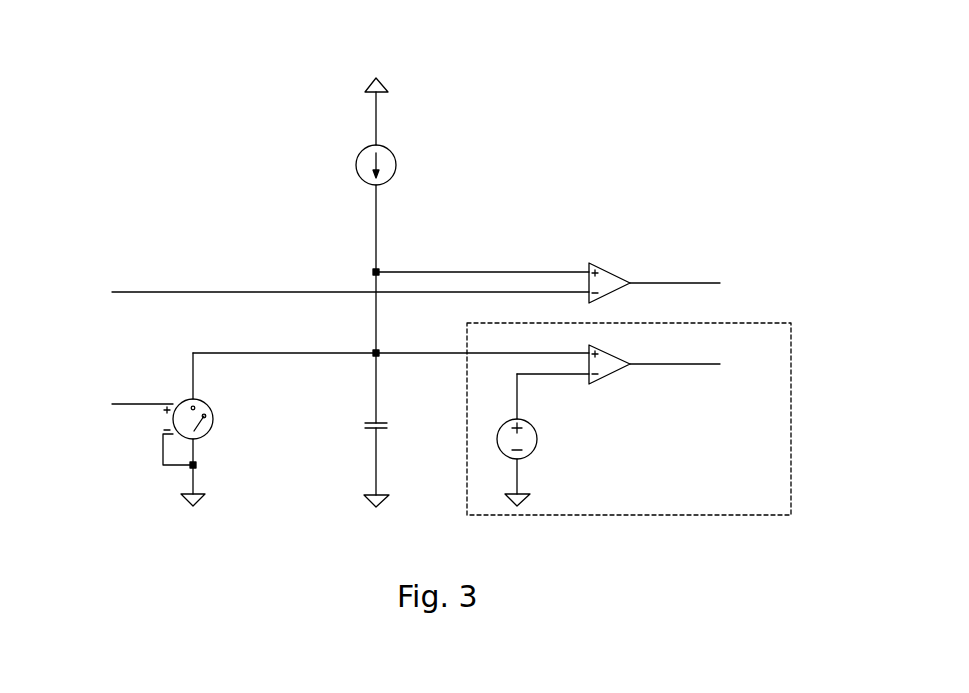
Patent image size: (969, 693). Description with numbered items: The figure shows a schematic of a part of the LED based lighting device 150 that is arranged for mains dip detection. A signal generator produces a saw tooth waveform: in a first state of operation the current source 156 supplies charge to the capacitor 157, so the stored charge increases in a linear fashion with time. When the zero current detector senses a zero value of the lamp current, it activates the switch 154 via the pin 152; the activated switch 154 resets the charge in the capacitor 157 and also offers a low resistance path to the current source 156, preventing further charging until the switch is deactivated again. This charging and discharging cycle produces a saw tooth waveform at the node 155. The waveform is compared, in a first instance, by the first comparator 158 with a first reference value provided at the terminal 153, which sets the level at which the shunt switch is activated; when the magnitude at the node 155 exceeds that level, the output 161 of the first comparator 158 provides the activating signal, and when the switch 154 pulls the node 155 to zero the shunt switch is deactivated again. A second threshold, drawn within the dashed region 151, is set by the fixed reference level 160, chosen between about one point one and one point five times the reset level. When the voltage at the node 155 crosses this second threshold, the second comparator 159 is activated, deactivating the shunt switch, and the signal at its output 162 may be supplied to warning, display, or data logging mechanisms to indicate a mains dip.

The part of LED based lighting device arranged for mains dip detection 150 is at (694, 104).
The comparator unit with reference voltage source 151 is at (792, 320).
The pin 152 is at (116, 400).
The terminal 153 is at (114, 289).
The switch 154 is at (212, 437).
The node 155 is at (382, 268).
The current source 156 is at (403, 167).
The capacitor 157 is at (370, 431).
The first comparator 158 is at (629, 271).
The second comparator 159 is at (629, 385).
The fixed reference level 160 is at (543, 446).
The output of first comparator 161 is at (726, 279).
The output of second comparator 162 is at (722, 372).